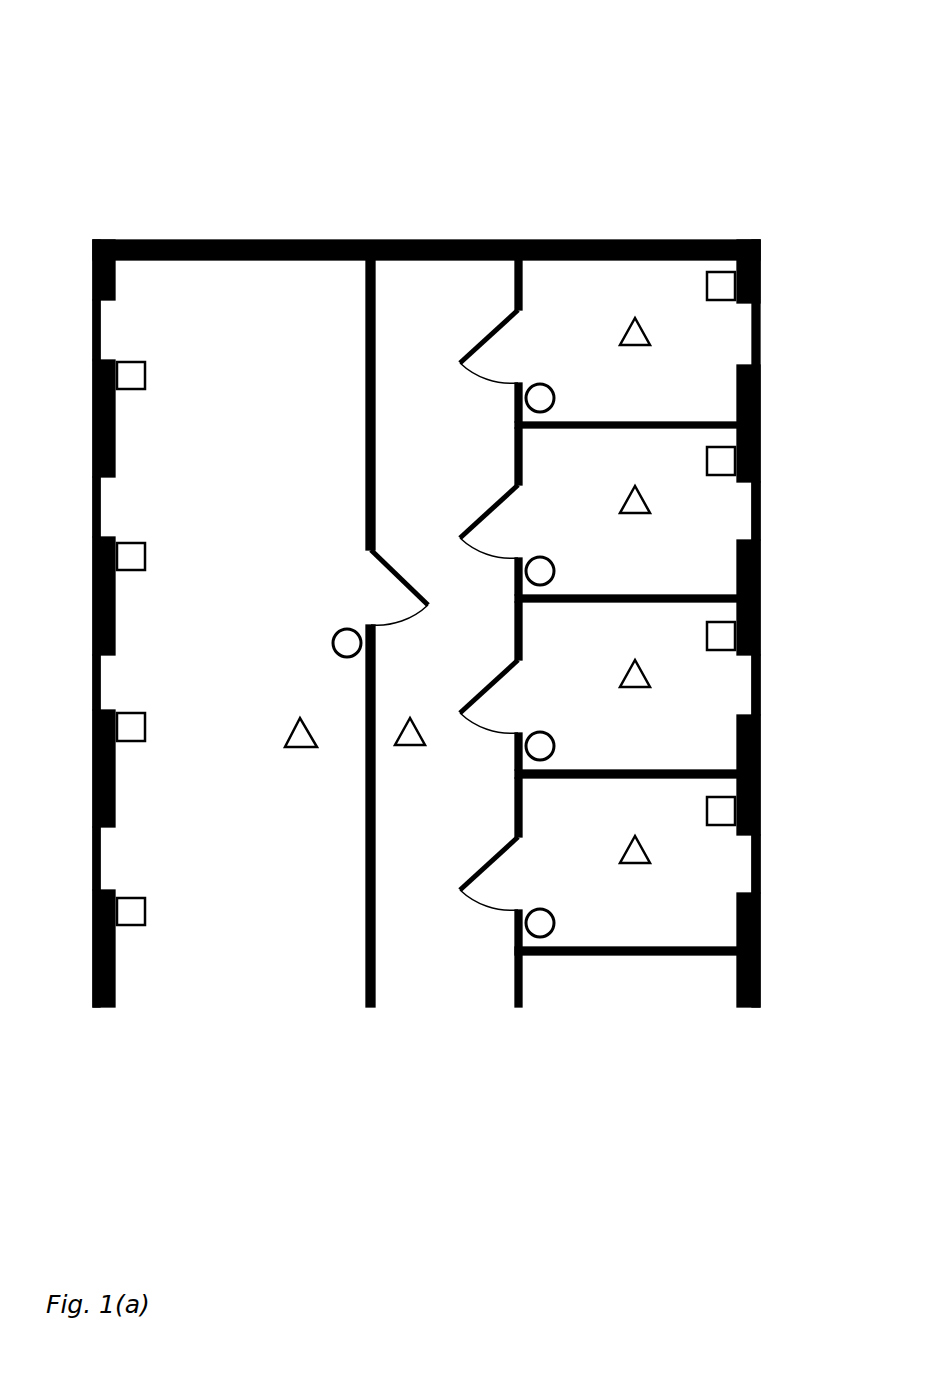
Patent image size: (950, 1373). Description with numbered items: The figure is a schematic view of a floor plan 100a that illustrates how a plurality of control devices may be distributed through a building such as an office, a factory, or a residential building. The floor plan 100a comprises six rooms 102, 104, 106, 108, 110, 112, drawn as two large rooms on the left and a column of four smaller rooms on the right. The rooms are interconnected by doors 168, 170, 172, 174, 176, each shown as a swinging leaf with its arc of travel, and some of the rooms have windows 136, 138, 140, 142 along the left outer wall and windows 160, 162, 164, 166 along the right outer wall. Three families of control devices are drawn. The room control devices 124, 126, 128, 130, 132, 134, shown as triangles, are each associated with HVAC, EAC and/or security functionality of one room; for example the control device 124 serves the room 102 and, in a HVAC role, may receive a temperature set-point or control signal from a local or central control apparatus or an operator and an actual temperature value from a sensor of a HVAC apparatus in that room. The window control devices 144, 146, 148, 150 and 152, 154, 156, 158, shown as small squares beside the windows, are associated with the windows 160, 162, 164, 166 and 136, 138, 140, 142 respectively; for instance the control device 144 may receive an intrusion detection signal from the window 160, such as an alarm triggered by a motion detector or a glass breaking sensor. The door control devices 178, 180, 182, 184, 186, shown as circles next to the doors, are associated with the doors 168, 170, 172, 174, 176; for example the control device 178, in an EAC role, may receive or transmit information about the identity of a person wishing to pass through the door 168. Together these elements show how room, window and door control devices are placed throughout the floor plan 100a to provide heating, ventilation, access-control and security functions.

The floor plan 100a is at (100, 75).
The room 102 is at (272, 308).
The room 104 is at (438, 305).
The room 106 is at (580, 289).
The room 108 is at (580, 457).
The room 110 is at (580, 631).
The room 112 is at (580, 807).
The control device 124 is at (290, 747).
The control device 126 is at (398, 745).
The control device 128 is at (614, 344).
The control device 130 is at (614, 512).
The control device 132 is at (614, 686).
The control device 134 is at (614, 862).
The window 136 is at (100, 328).
The window 138 is at (100, 502).
The window 140 is at (100, 673).
The window 142 is at (100, 848).
The control device 144 is at (715, 300).
The control device 146 is at (715, 475).
The control device 148 is at (715, 650).
The control device 150 is at (715, 825).
The control device 152 is at (145, 373).
The control device 154 is at (145, 553).
The control device 156 is at (145, 723).
The control device 158 is at (145, 906).
The window 160 is at (760, 336).
The window 162 is at (760, 507).
The window 164 is at (760, 687).
The window 166 is at (760, 859).
The door 168 is at (414, 585).
The door 170 is at (500, 320).
The door 172 is at (500, 488).
The door 174 is at (500, 662).
The door 176 is at (500, 838).
The control device 178 is at (344, 628).
The control device 180 is at (554, 398).
The control device 182 is at (554, 571).
The control device 184 is at (554, 746).
The control device 186 is at (554, 923).